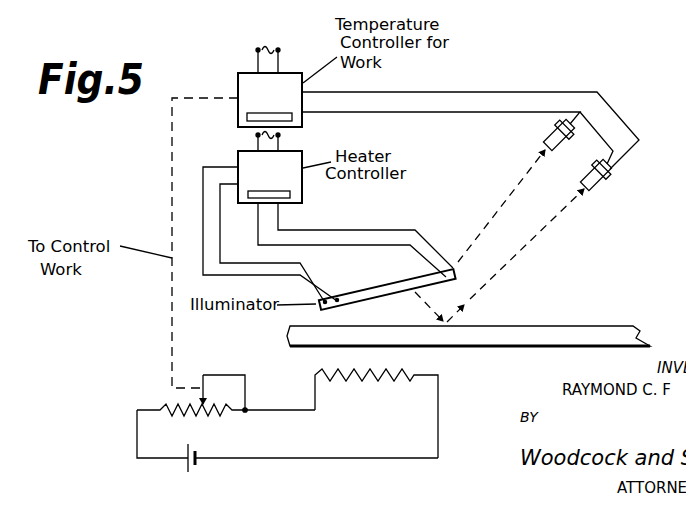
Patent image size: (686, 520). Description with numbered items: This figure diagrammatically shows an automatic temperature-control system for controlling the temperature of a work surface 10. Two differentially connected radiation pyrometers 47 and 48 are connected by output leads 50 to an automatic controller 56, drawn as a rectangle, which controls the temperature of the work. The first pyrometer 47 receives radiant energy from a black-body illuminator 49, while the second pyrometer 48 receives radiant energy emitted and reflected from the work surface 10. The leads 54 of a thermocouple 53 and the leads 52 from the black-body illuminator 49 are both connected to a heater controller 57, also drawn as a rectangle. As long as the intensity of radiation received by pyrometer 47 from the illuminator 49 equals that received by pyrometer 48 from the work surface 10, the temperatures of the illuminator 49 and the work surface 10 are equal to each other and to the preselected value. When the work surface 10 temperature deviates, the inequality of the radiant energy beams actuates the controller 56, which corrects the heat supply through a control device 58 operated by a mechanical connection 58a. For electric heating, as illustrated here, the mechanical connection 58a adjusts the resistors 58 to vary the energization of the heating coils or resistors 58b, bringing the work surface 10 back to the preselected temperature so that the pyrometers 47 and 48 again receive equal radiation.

The work surface 10 is at (570, 323).
The radiation pyrometer 47 is at (543, 137).
The radiation pyrometer 48 is at (601, 189).
The black-body illuminator 49 is at (377, 288).
The output leads 50 is at (613, 112).
The leads 52 is at (203, 200).
The thermocouple 53 is at (499, 236).
The leads 54 is at (346, 231).
The automatic controller 56 is at (270, 87).
The heater controller 57 is at (270, 168).
The control device 58 is at (178, 403).
The mechanical connection 58a is at (172, 152).
The heating resistors 58b is at (401, 380).